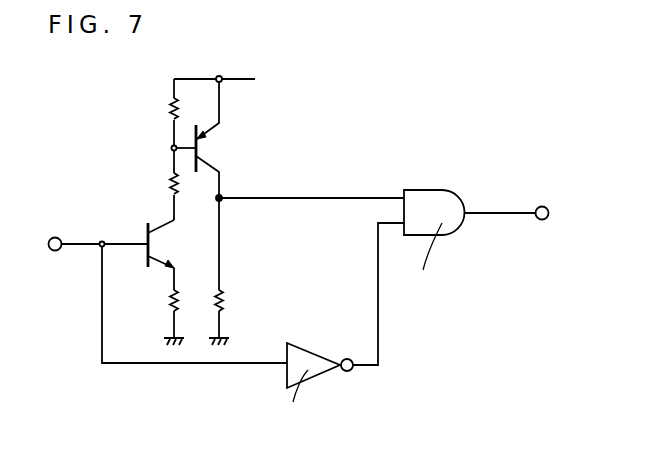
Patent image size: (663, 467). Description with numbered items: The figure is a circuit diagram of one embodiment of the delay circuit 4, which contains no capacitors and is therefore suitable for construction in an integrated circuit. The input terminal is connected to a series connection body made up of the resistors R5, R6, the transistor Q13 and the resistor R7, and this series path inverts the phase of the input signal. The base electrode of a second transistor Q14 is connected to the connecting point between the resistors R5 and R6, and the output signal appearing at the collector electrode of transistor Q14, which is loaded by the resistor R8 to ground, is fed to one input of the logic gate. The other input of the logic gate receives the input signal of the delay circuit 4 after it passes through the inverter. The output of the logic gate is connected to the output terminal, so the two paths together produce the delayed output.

The delay circuit 4 is at (338, 138).
The resistor R5 is at (156, 111).
The resistor R6 is at (153, 179).
The resistor R7 is at (154, 304).
The resistor R8 is at (240, 304).
The transistor Q13 is at (173, 245).
The transistor Q14 is at (225, 148).